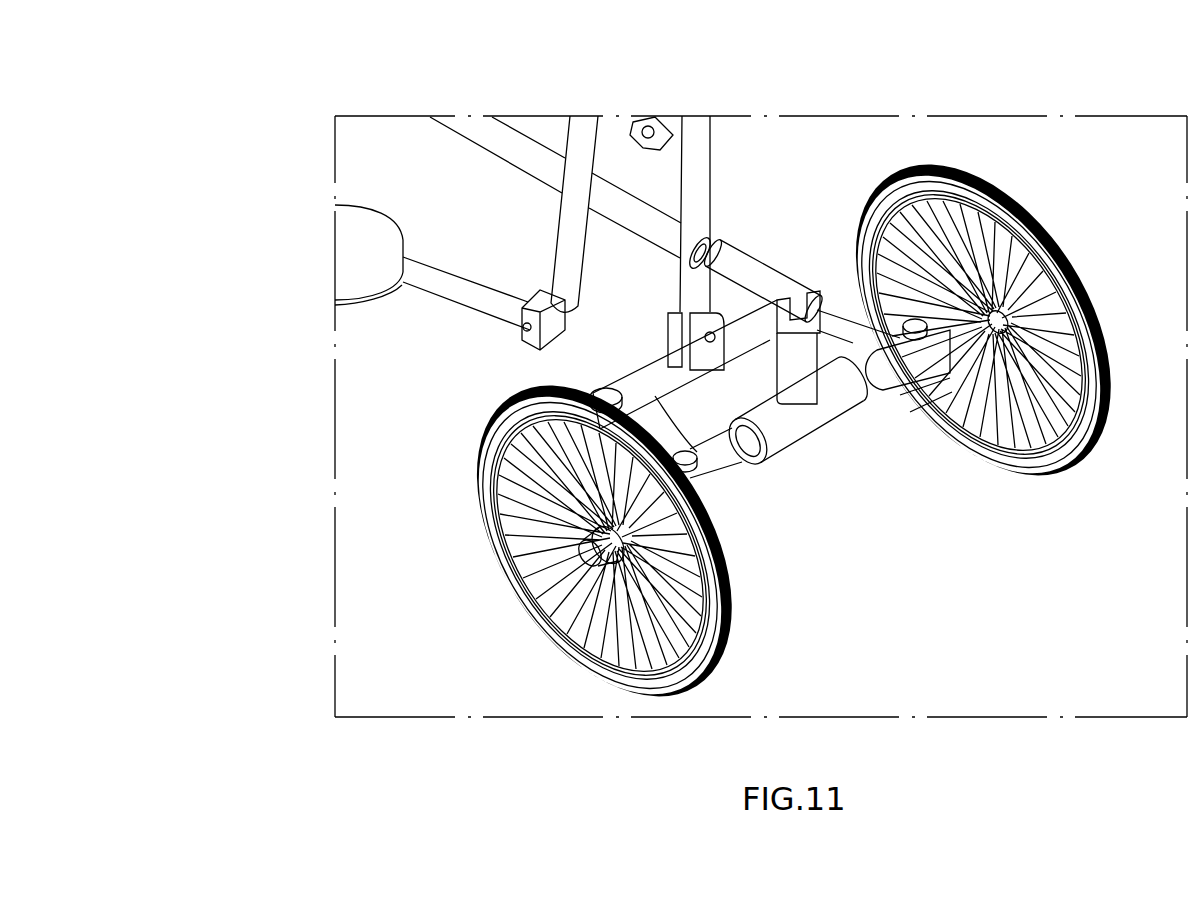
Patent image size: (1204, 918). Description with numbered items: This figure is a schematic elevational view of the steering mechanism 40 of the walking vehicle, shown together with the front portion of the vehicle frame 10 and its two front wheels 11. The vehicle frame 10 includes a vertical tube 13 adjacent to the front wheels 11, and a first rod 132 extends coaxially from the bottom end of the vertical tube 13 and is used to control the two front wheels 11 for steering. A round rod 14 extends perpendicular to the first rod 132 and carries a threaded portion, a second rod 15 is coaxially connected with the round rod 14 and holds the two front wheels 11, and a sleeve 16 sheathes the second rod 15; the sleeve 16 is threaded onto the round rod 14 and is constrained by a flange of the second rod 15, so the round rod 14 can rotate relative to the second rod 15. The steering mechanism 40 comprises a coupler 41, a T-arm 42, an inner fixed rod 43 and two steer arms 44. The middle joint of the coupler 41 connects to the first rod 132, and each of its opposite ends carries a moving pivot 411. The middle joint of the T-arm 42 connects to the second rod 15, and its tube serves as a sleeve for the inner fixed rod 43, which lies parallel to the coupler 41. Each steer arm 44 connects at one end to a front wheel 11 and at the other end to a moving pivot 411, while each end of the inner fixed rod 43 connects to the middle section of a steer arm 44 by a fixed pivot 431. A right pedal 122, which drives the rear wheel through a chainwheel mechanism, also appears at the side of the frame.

The vehicle frame 10 is at (497, 162).
The front wheel 11 is at (1052, 238).
The vertical tube 13 is at (703, 162).
The round rod 14 is at (693, 258).
The second rod 15 is at (777, 292).
The sleeve 16 is at (740, 262).
The steering mechanism 40 is at (694, 359).
The coupler 41 is at (583, 431).
The T-arm 42 is at (840, 418).
The inner fixed rod 43 is at (946, 322).
The steer arm 44 is at (1068, 381).
The right pedal 122 is at (363, 261).
The first rod 132 is at (697, 285).
The moving pivot 411 is at (603, 392).
The fixed pivot 431 is at (915, 323).